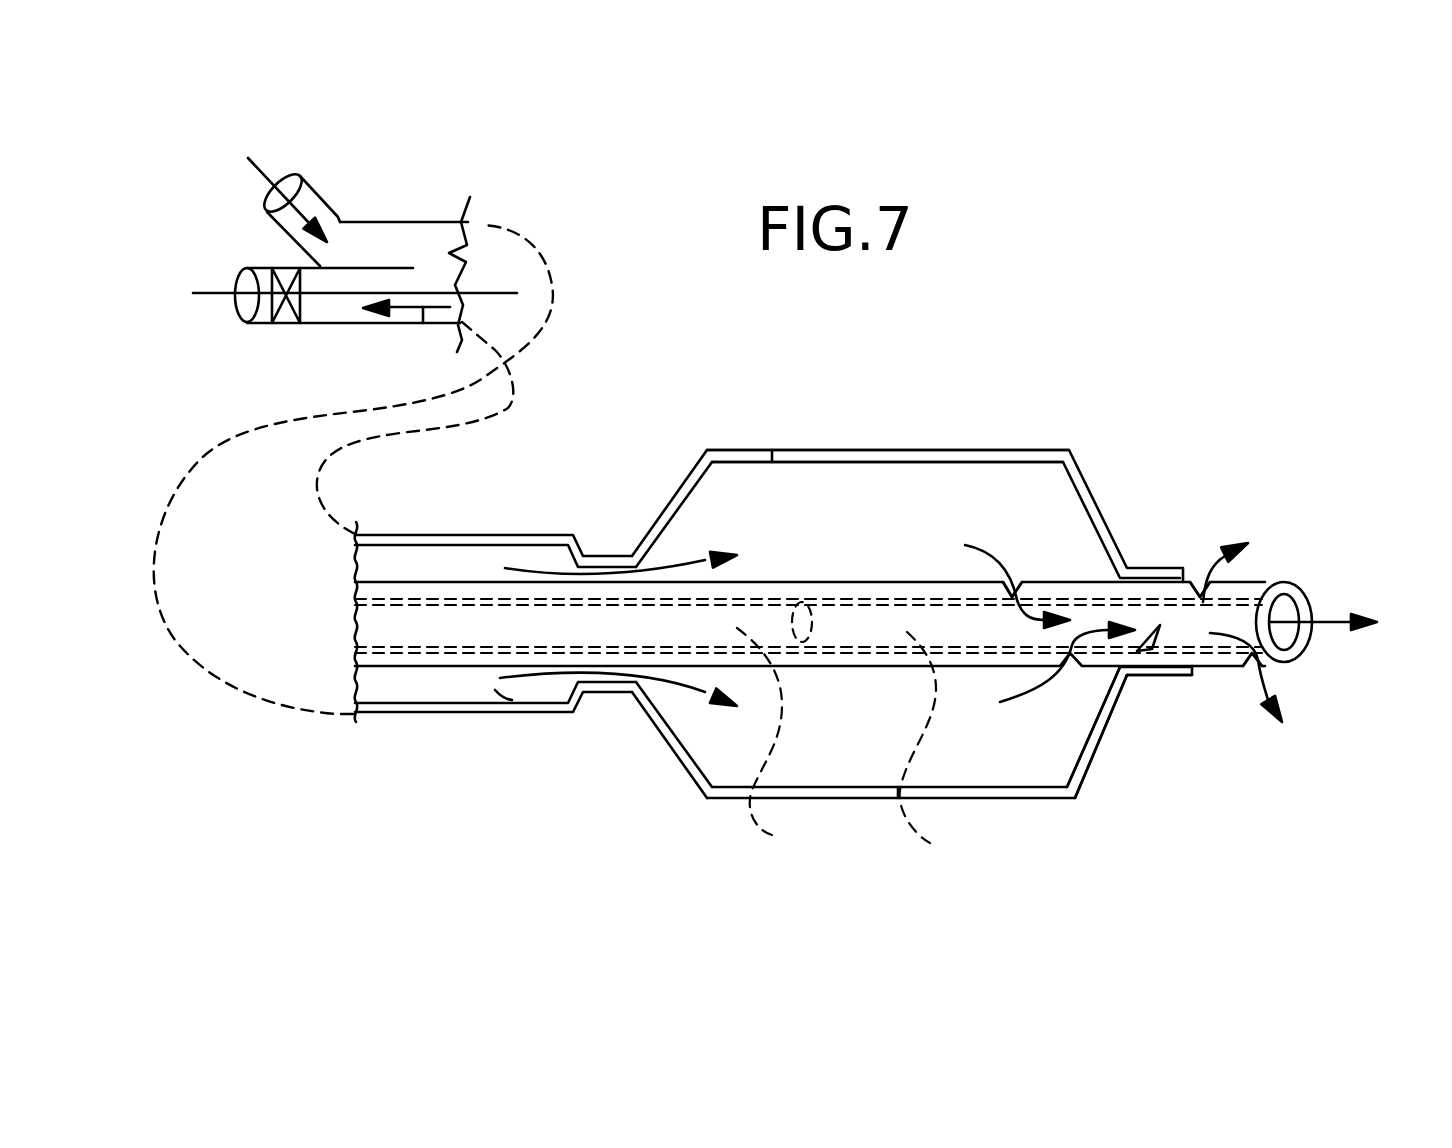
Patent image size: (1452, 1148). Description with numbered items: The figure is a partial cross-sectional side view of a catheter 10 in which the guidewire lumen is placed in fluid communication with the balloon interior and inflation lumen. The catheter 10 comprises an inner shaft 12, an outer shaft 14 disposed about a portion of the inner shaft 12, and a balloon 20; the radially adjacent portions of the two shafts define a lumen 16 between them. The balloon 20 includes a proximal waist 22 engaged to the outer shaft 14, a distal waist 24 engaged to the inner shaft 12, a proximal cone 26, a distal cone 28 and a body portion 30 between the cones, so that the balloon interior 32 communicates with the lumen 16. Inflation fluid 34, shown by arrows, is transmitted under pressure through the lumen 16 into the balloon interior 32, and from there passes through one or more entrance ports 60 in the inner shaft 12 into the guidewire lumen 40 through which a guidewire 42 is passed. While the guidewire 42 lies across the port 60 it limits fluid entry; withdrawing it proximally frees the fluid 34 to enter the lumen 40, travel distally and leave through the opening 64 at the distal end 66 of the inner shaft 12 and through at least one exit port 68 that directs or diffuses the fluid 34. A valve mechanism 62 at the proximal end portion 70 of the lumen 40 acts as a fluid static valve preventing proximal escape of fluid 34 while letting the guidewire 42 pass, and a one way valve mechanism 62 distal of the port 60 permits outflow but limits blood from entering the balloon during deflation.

The catheter 10 is at (1000, 377).
The inner shaft 12 is at (360, 714).
The outer shaft 14 is at (447, 714).
The lumen 16 is at (512, 714).
The balloon 20 is at (880, 422).
The proximal waist 22 is at (611, 706).
The distal waist 24 is at (1170, 676).
The proximal cone 26 is at (650, 507).
The distal cone 28 is at (1093, 762).
The body portion 30 is at (772, 450).
The balloon interior 32 is at (843, 490).
The inflation fluid 34 is at (313, 198).
The guidewire lumen 40 is at (933, 748).
The guidewire 42 is at (203, 202).
The entrance port 60 is at (1022, 545).
The valve mechanism 62 is at (1140, 600).
The opening 64 is at (1285, 608).
The distal end 66 is at (1307, 693).
The exit port 68 is at (1240, 650).
The proximal end portion 70 is at (357, 192).